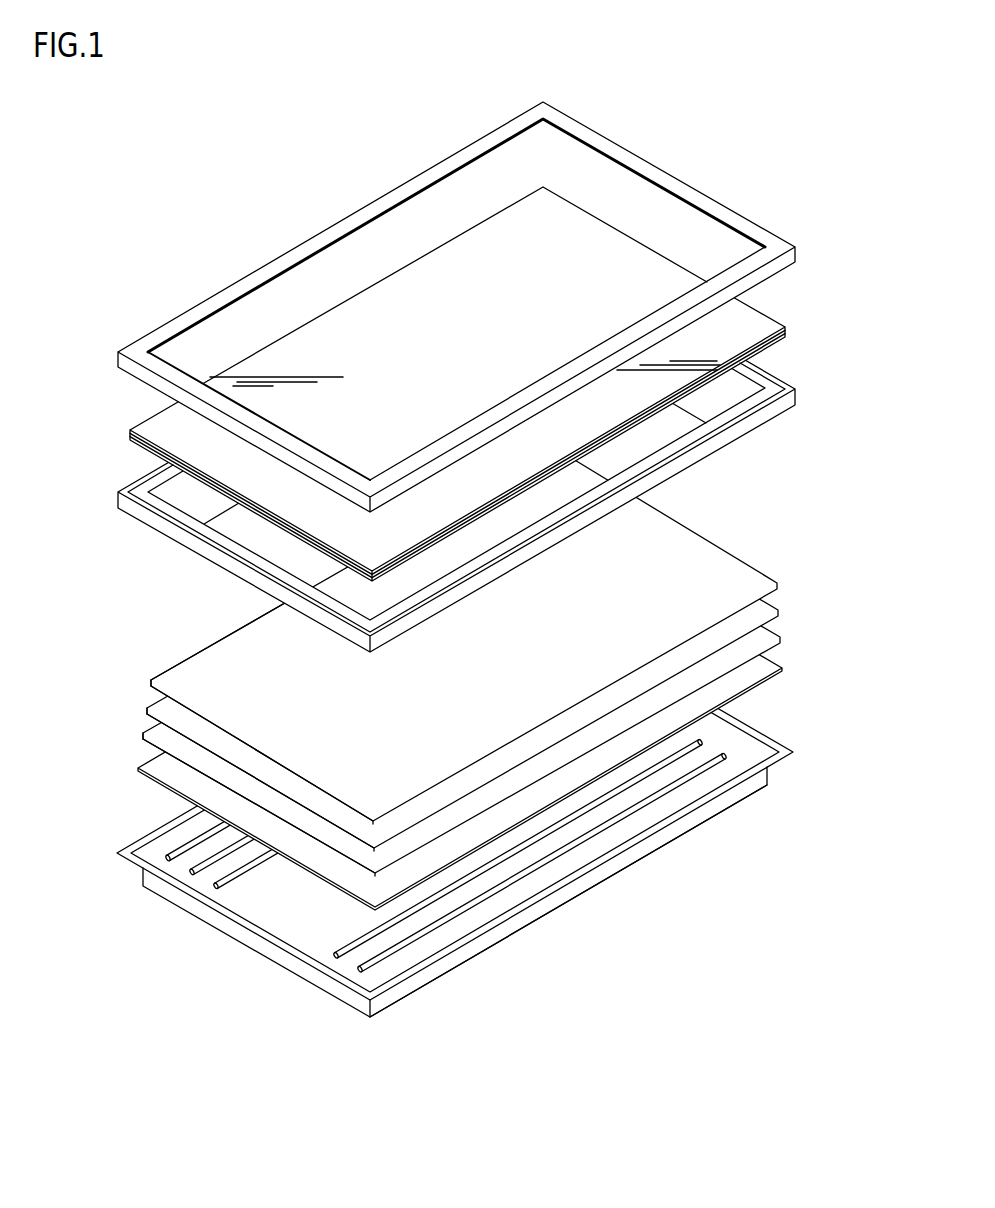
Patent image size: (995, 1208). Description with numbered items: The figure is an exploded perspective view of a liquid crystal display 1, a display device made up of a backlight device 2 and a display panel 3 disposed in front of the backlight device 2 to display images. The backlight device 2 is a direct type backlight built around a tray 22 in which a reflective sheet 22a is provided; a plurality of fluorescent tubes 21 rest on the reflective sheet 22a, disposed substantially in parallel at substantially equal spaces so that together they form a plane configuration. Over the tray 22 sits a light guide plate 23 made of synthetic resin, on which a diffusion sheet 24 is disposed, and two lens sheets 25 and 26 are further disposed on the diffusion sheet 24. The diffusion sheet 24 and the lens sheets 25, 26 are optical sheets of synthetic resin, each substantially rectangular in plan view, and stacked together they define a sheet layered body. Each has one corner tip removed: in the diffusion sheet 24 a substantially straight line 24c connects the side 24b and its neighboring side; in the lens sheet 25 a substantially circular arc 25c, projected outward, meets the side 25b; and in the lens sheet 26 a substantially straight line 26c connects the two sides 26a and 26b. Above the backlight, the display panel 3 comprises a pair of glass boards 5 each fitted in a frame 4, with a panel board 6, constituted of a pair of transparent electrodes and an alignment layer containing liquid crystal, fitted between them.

The liquid crystal display 1 is at (243, 194).
The backlight device 2 is at (848, 527).
The display panel 3 is at (848, 197).
The frame 4 is at (763, 232).
The glass board 5 is at (692, 227).
The panel board 6 is at (767, 325).
The fluorescent tube 21 is at (710, 740).
The tray 22 is at (775, 748).
The reflective sheet 22a is at (428, 947).
The light guide plate 23 is at (766, 668).
The diffusion sheet 24 is at (762, 637).
The side of diffusion sheet 24b is at (337, 855).
The straight line 24c is at (143, 737).
The lens sheet 25 is at (752, 610).
The side of lens sheet 25b is at (320, 820).
The circular arc 25c is at (147, 712).
The lens sheet 26 is at (750, 580).
The side of lens sheet 26a is at (187, 656).
The side of lens sheet 26b is at (240, 743).
The straight line 26c is at (151, 686).